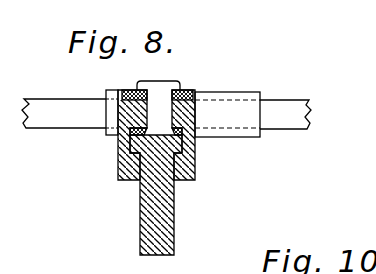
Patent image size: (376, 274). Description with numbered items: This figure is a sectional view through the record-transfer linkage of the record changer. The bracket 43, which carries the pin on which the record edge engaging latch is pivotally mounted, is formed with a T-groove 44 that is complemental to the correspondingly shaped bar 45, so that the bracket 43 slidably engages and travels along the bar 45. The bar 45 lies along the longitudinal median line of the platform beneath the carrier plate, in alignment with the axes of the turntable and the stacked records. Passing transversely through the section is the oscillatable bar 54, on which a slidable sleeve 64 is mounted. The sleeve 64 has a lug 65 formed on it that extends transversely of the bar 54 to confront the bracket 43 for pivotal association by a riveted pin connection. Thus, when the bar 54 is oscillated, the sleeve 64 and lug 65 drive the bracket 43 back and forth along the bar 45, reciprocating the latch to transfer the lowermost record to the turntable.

The bracket 43 is at (194, 157).
The T-groove 44 is at (192, 148).
The bar 45 is at (152, 213).
The bar 54 is at (297, 110).
The sleeve 64 is at (240, 112).
The lug 65 is at (184, 89).